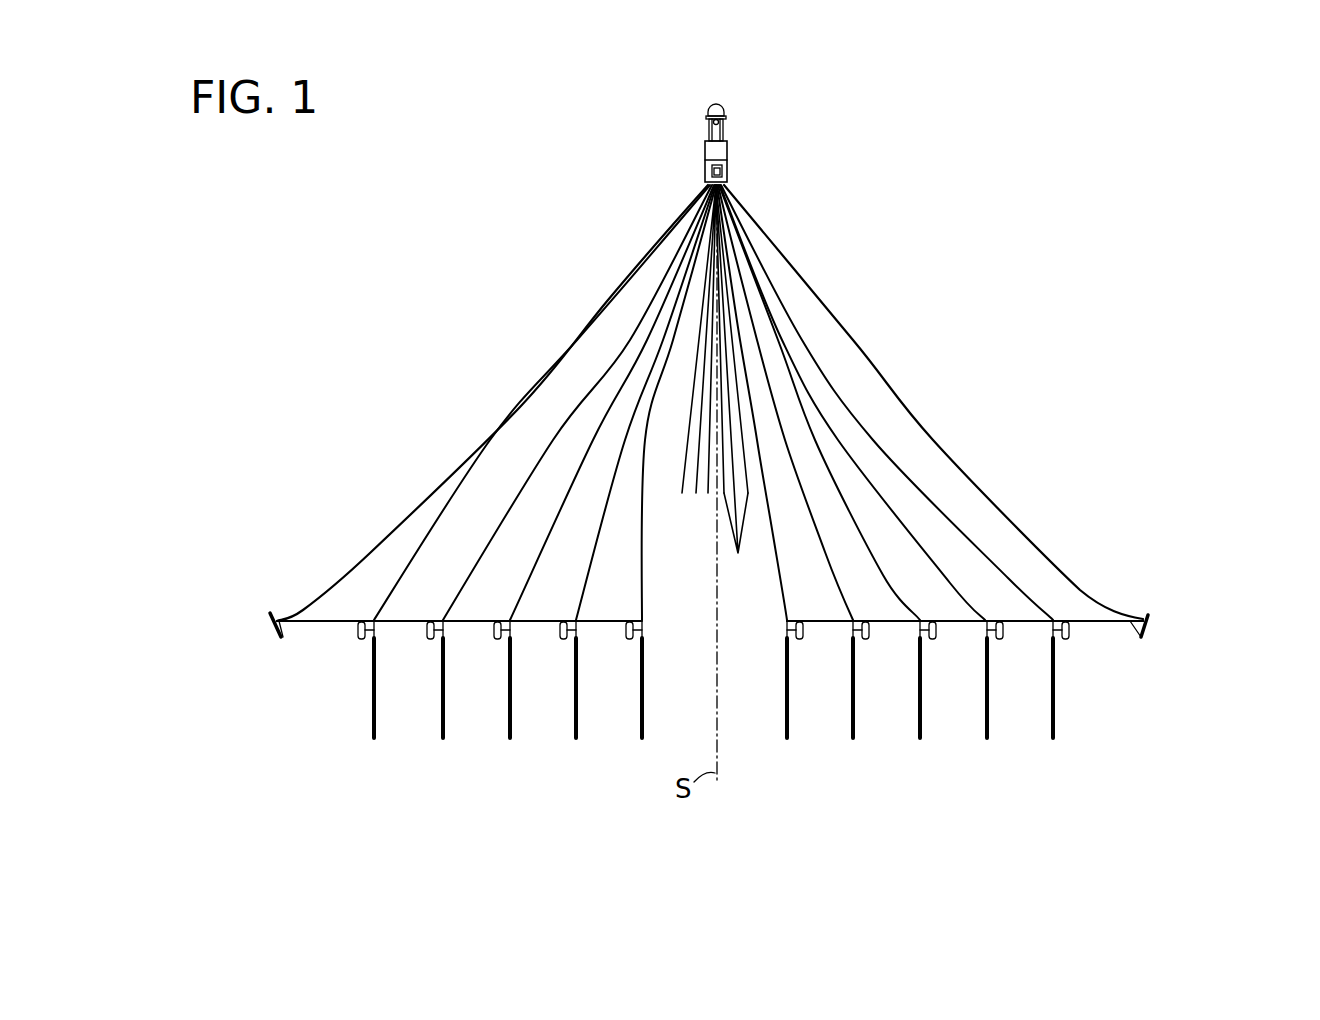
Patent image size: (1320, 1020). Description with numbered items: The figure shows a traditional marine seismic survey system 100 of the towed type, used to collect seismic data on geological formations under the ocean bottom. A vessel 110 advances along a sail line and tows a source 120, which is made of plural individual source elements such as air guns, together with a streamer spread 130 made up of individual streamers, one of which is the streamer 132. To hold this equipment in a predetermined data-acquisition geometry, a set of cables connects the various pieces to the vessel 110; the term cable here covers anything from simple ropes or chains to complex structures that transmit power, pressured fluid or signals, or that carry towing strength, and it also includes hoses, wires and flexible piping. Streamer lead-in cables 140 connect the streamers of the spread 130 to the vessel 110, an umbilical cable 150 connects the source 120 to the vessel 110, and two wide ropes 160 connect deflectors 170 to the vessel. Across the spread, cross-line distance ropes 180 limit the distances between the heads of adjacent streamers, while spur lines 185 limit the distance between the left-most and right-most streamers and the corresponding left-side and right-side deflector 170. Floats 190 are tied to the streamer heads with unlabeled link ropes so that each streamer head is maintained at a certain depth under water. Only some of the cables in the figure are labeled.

The marine seismic survey system 100 is at (967, 213).
The vessel 110 is at (718, 152).
The source 120 is at (743, 385).
The streamer spread 130 is at (795, 714).
The streamer 132 is at (788, 705).
The streamer lead-in cable 140 is at (775, 533).
The umbilical cable 150 is at (722, 363).
The wide rope 160 is at (873, 357).
The deflector 170 is at (1147, 617).
The cross-line distance rope 180 is at (1032, 621).
The spur line 185 is at (1112, 621).
The float 190 is at (1068, 637).